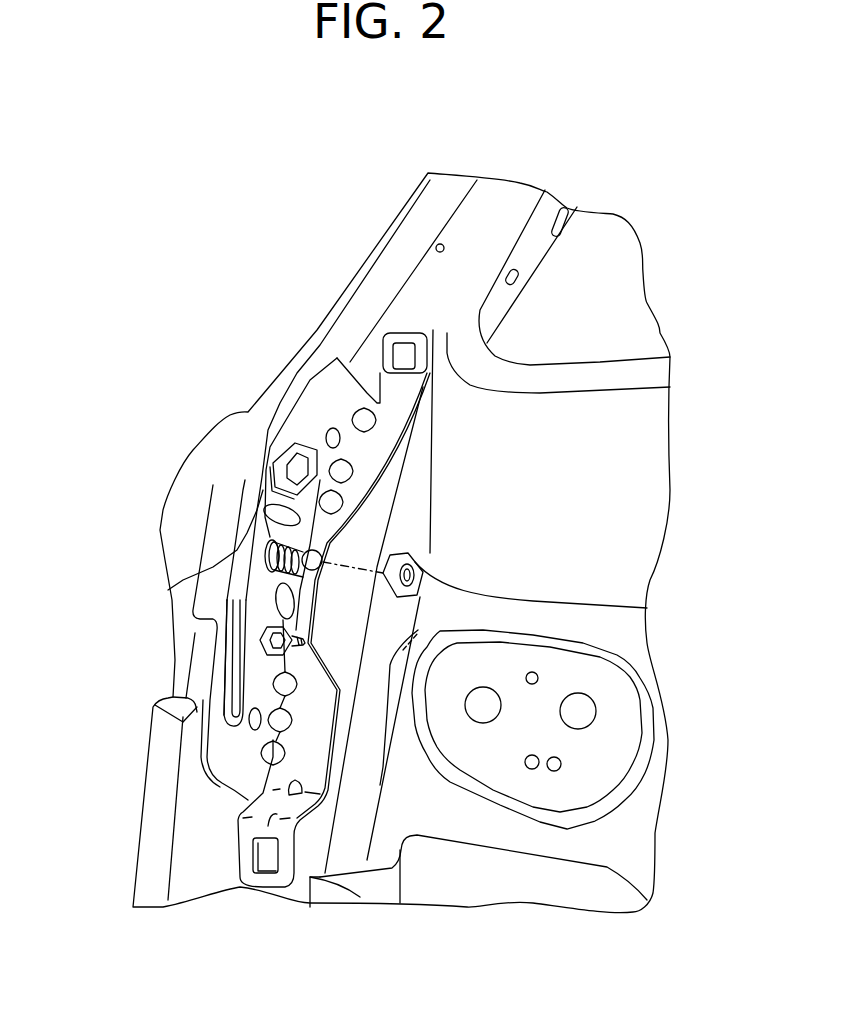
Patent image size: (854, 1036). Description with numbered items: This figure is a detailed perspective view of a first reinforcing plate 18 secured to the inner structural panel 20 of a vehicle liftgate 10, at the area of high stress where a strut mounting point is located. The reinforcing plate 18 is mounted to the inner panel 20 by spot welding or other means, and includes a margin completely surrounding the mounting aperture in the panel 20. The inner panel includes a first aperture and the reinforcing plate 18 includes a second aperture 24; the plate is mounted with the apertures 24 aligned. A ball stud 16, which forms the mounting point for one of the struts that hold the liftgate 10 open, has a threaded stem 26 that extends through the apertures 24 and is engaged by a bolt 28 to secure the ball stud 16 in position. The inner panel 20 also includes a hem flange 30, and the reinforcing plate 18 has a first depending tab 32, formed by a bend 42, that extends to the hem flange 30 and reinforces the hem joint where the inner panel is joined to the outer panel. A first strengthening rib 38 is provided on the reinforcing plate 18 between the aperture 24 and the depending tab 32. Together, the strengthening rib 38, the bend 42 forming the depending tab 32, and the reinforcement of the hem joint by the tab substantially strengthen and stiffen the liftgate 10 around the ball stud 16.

The liftgate 10 is at (632, 191).
The ball stud 16 is at (283, 580).
The first reinforcing plate 18 is at (215, 760).
The inner structural panel 20 is at (633, 647).
The second aperture 24 is at (275, 542).
The threaded stem 26 is at (278, 543).
The bolt 28 is at (427, 571).
The hem flange 30 is at (158, 723).
The first depending tab 32 is at (183, 568).
The first strengthening rib 38 is at (240, 600).
The bend 42 is at (268, 563).